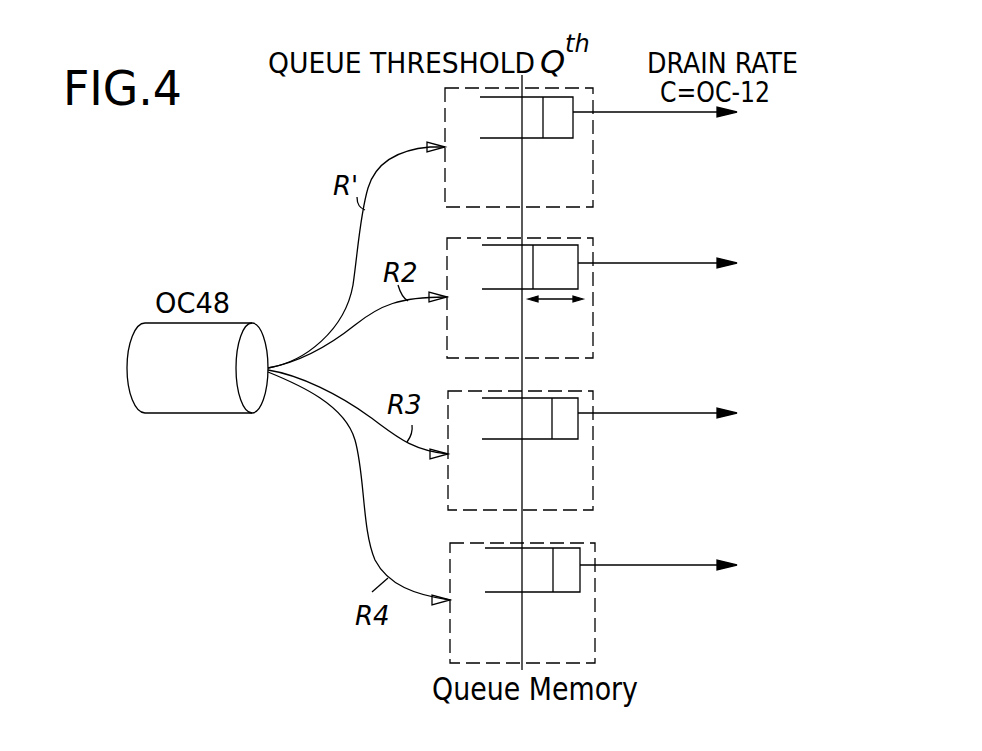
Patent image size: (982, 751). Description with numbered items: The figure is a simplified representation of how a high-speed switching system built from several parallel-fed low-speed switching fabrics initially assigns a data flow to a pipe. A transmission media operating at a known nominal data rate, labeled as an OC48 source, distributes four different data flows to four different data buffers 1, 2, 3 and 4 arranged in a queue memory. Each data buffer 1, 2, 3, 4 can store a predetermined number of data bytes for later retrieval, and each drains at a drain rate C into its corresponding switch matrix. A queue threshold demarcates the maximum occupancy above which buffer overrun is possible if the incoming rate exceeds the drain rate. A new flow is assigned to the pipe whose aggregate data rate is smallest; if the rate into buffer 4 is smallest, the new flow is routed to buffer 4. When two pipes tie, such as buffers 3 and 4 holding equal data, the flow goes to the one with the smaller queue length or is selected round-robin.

The data buffer 1 is at (593, 162).
The data buffer 2 is at (593, 327).
The data buffer 3 is at (593, 460).
The data buffer 4 is at (595, 633).